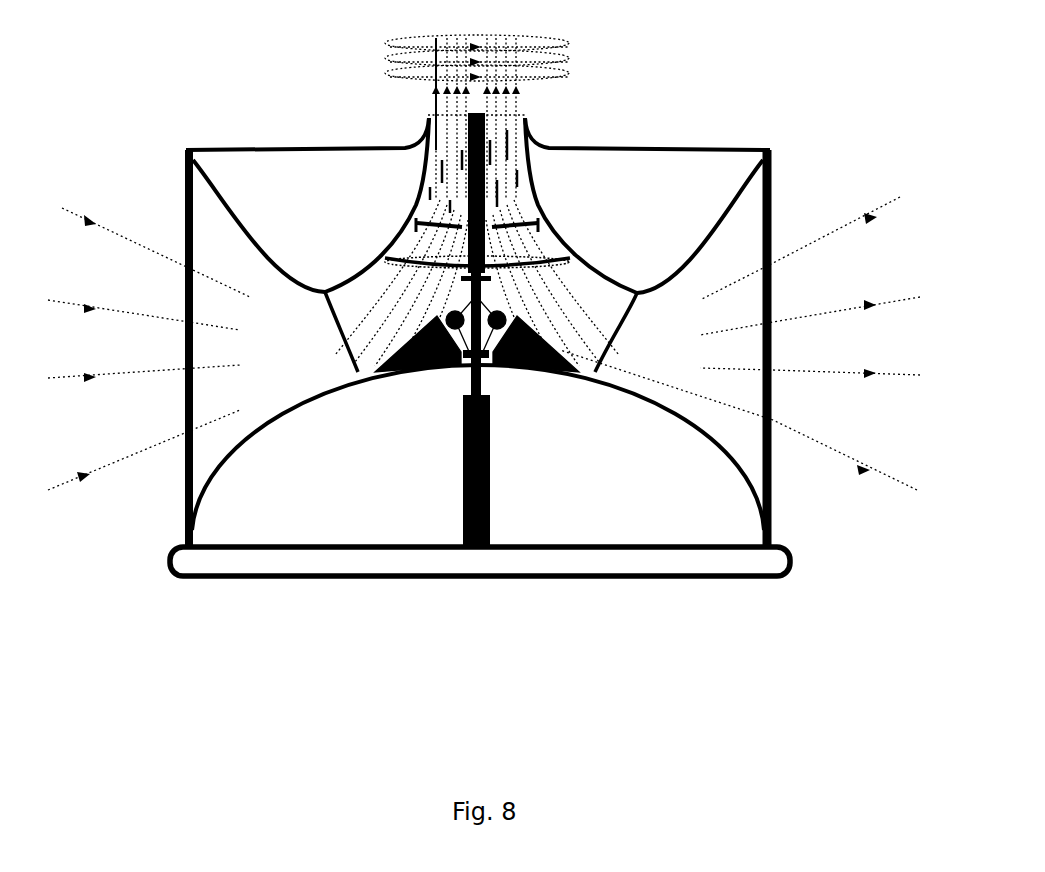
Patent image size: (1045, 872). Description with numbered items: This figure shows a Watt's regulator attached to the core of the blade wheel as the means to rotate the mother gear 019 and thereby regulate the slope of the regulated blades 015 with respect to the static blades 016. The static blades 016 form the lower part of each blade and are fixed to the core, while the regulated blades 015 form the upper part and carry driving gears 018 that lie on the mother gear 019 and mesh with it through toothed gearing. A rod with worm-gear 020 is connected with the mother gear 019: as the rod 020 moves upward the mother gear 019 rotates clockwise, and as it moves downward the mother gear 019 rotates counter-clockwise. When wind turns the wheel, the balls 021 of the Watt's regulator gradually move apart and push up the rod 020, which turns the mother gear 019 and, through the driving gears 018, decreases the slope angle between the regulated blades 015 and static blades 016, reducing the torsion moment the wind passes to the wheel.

The regulated blade 015 is at (430, 140).
The static blade 016 is at (605, 382).
The driving gear 018 is at (545, 228).
The mother gear 019 is at (377, 257).
The rod with worm-gear 020 is at (520, 247).
The balls 021 is at (490, 342).